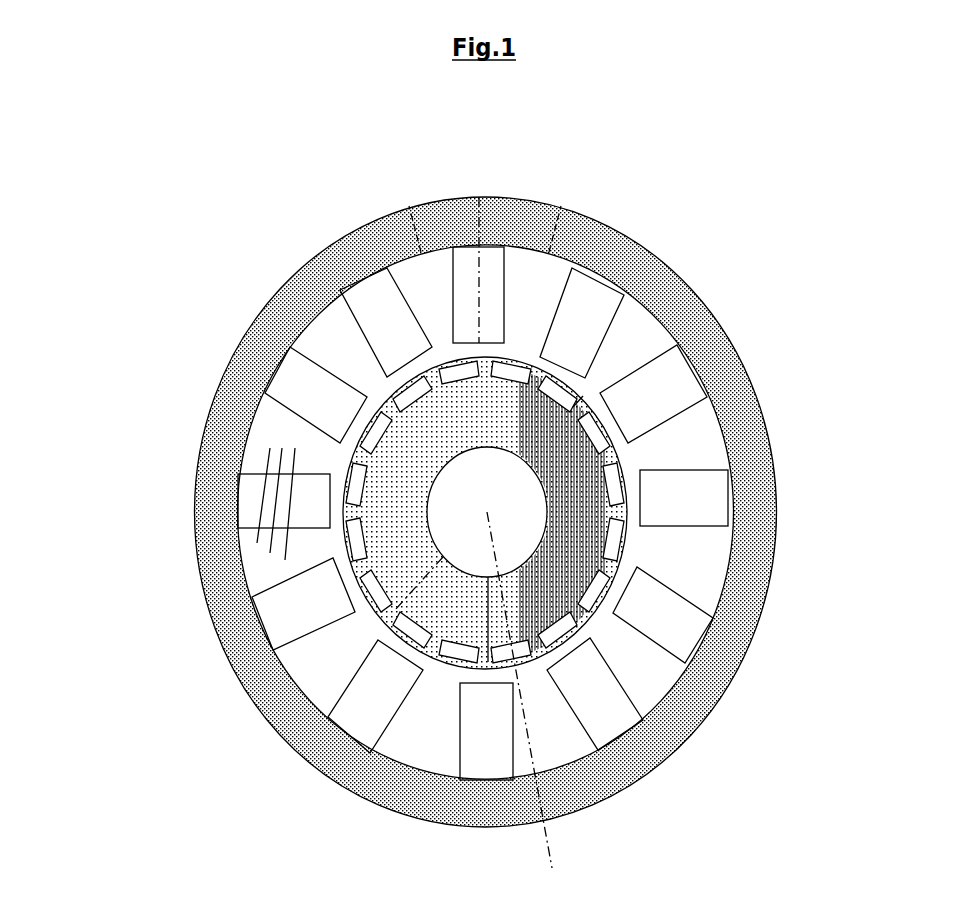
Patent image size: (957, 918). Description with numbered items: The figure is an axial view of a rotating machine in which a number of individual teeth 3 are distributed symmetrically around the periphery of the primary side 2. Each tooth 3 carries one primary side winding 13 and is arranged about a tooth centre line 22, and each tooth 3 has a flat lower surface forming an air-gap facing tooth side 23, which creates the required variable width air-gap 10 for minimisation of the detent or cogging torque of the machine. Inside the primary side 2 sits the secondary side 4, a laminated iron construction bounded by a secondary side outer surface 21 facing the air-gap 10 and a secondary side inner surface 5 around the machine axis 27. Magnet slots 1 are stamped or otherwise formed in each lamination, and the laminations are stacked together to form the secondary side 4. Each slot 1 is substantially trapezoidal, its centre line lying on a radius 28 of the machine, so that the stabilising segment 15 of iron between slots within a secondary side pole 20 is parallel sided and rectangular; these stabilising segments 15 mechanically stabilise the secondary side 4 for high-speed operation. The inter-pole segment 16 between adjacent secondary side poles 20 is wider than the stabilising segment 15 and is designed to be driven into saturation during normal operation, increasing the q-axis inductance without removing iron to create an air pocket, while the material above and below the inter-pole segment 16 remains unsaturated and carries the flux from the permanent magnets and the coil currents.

The secondary side slot/magnet 1 is at (603, 406).
The primary side 2 is at (756, 393).
The primary side tooth 3 is at (496, 261).
The secondary side 4 is at (595, 515).
The secondary side inner surface 5 is at (553, 557).
The air-gap 10 is at (351, 410).
The primary side winding 13 is at (255, 463).
The stabilising segment 15 is at (541, 356).
The inter-pole segment 16 is at (586, 392).
The secondary side pole 20 is at (426, 613).
The secondary side outer surface 21 is at (639, 456).
The tooth centre line 22 is at (470, 264).
The air-gap facing tooth side 23 is at (392, 349).
The machine axis 27 is at (463, 517).
The radius 28 is at (504, 773).